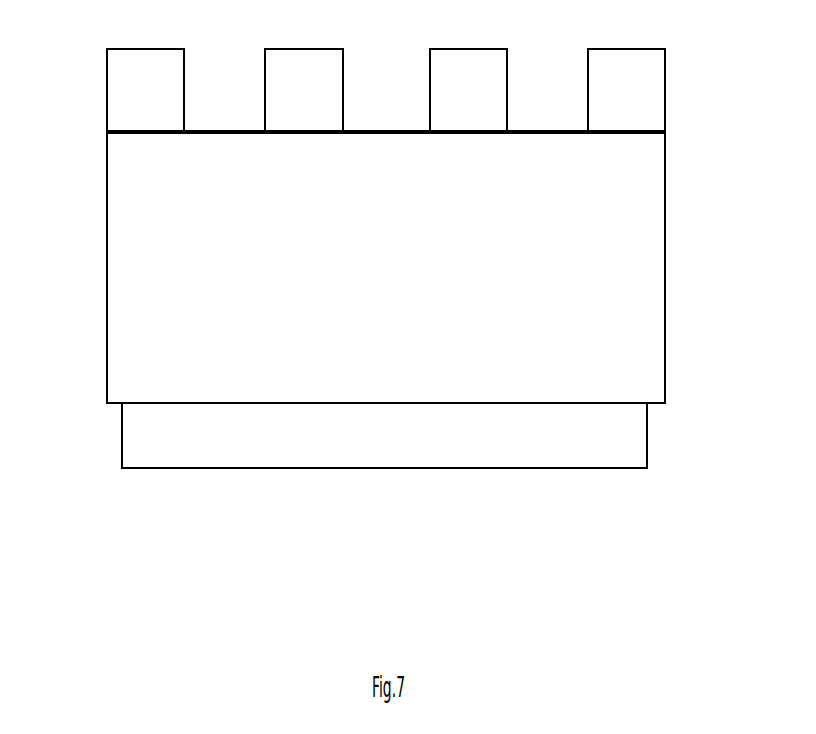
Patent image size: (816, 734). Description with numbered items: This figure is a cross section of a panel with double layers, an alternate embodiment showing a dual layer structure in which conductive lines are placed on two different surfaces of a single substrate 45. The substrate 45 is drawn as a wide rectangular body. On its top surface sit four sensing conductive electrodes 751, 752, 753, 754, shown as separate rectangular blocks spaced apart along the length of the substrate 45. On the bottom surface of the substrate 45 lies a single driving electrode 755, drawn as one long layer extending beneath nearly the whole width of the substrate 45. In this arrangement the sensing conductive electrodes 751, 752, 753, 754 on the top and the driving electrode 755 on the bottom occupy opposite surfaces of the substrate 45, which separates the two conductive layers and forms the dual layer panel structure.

The substrate 45 is at (137, 263).
The sensing conductive electrode 751 is at (145, 71).
The sensing conductive electrode 752 is at (304, 71).
The sensing conductive electrode 753 is at (468, 71).
The sensing conductive electrode 754 is at (626, 71).
The driving electrode 755 is at (618, 440).